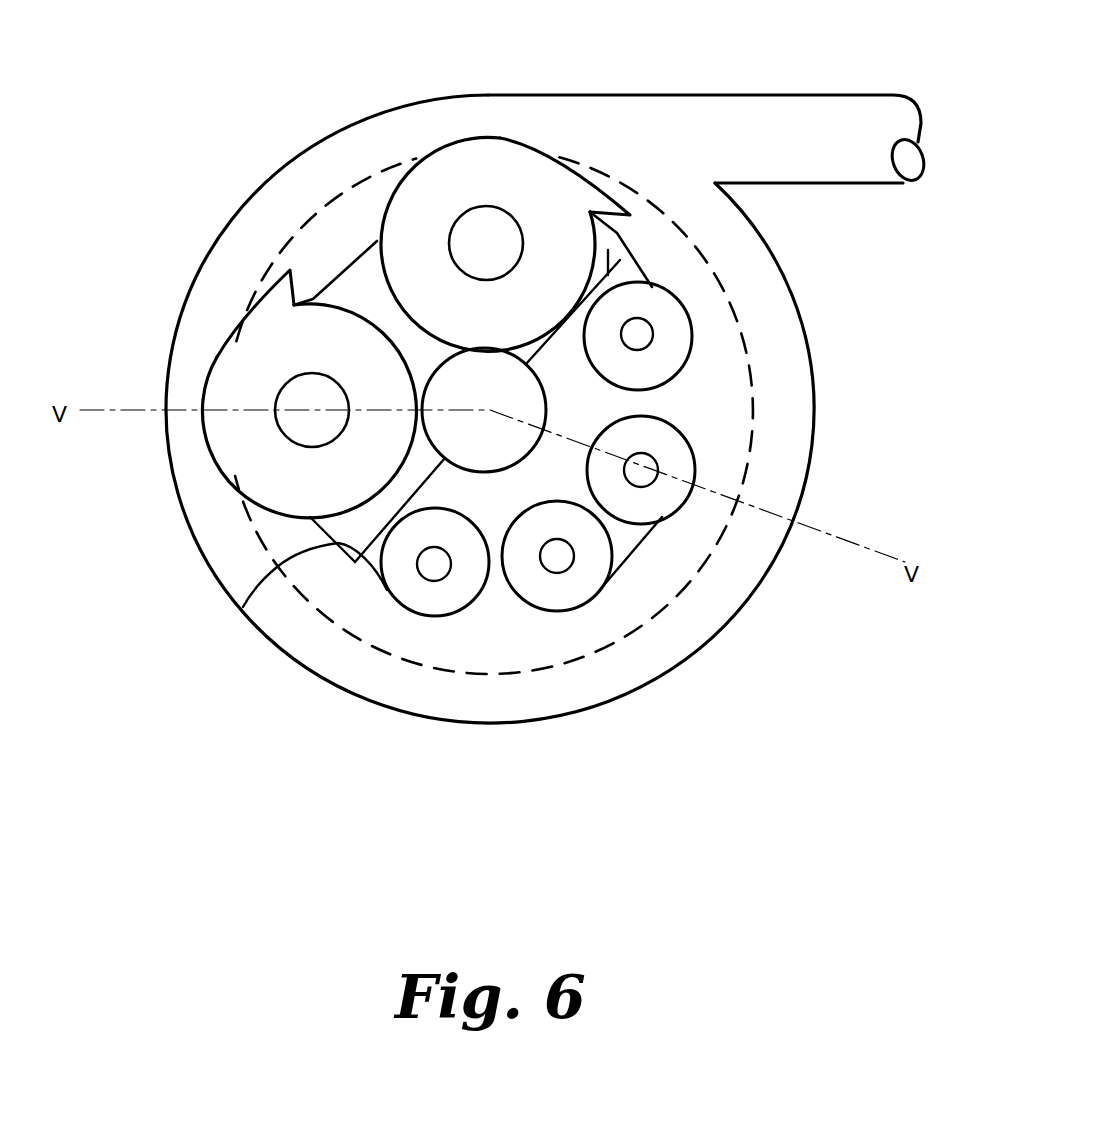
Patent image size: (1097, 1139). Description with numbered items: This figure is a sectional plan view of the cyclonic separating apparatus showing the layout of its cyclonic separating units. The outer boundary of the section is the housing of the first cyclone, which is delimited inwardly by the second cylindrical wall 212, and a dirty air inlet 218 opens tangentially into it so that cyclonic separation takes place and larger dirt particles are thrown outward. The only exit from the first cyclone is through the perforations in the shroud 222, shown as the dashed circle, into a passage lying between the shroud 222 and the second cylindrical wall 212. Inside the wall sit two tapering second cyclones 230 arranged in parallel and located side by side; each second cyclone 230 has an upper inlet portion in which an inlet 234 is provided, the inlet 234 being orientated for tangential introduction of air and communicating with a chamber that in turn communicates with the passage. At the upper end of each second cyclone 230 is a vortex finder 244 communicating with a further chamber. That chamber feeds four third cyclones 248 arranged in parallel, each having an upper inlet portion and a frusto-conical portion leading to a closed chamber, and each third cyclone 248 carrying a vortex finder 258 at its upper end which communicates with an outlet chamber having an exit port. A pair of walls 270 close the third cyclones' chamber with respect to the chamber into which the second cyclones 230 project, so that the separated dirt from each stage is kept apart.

The second cylindrical wall 212 is at (352, 258).
The dirty air inlet 218 is at (814, 120).
The shroud 222 is at (757, 438).
The second cyclone 230 is at (510, 155).
The inlet 234 is at (595, 192).
The vortex finder 244 is at (465, 212).
The third cyclone 248 is at (589, 468).
The vortex finder 258 is at (653, 334).
The wall 270 is at (610, 250).